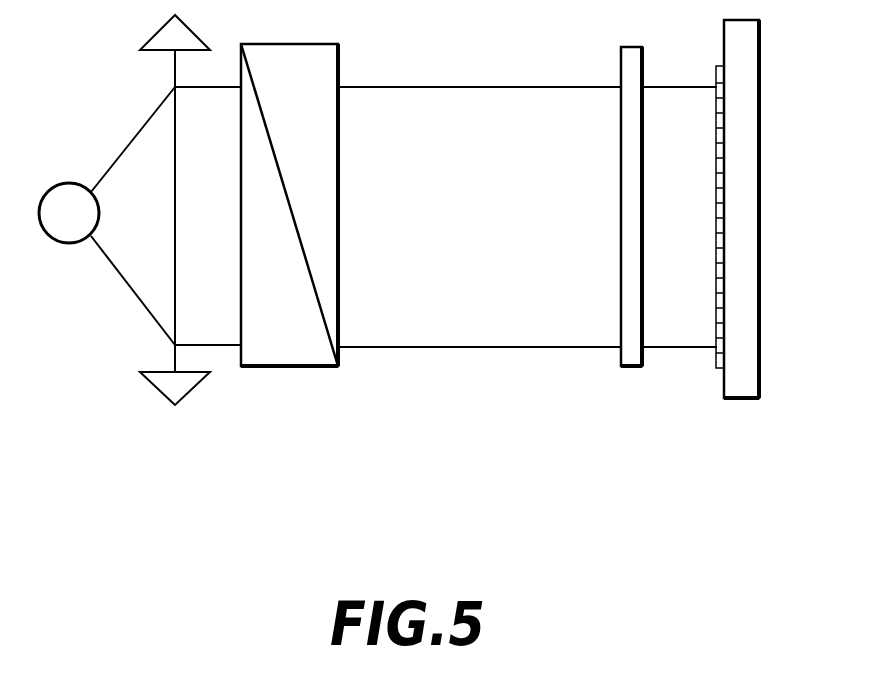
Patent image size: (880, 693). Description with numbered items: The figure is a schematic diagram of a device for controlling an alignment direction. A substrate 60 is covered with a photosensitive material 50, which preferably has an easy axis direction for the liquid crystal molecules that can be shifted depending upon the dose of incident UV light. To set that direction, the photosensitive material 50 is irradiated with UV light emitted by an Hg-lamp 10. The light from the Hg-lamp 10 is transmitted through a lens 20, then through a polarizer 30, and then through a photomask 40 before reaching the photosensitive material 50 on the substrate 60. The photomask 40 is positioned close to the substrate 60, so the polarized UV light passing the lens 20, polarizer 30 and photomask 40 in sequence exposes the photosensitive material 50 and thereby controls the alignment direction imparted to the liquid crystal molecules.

The Hg-lamp 10 is at (66, 244).
The lens 20 is at (163, 385).
The polarizer 30 is at (281, 369).
The photomask 40 is at (627, 370).
The photosensitive material 50 is at (717, 351).
The substrate 60 is at (760, 252).